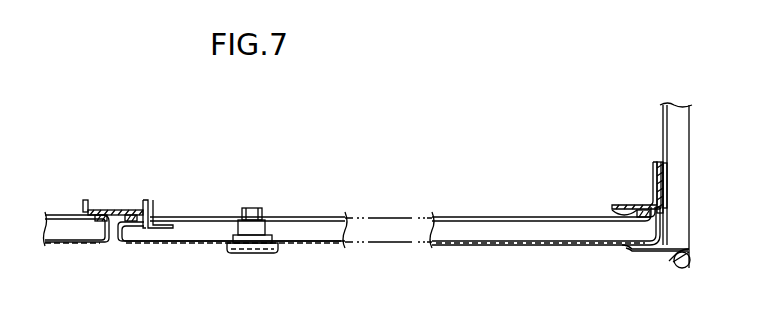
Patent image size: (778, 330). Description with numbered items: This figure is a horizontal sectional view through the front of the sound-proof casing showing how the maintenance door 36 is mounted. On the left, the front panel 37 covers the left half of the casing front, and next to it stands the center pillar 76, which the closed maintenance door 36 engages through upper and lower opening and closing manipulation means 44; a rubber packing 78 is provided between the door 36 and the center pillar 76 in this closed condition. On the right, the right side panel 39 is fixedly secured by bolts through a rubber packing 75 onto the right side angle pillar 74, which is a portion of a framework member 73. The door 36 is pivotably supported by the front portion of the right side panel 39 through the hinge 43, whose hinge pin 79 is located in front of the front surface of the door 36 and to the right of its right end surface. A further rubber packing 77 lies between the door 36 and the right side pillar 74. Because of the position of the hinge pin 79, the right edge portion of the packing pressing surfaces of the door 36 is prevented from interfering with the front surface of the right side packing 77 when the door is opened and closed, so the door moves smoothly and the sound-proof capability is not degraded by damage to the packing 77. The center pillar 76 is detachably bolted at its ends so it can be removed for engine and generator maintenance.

The maintenance door 36 is at (452, 247).
The front panel 37 is at (62, 248).
The right side panel 39 is at (680, 181).
The hinge 43 is at (648, 251).
The opening and closing manipulation means 44 is at (253, 255).
The framework member 73 is at (650, 170).
The right side angle pillar 74 is at (650, 190).
The rubber packing 75 is at (665, 171).
The center pillar 76 is at (137, 210).
The rubber packing 77 is at (612, 208).
The rubber packing 78 is at (92, 217).
The hinge pin 79 is at (687, 268).